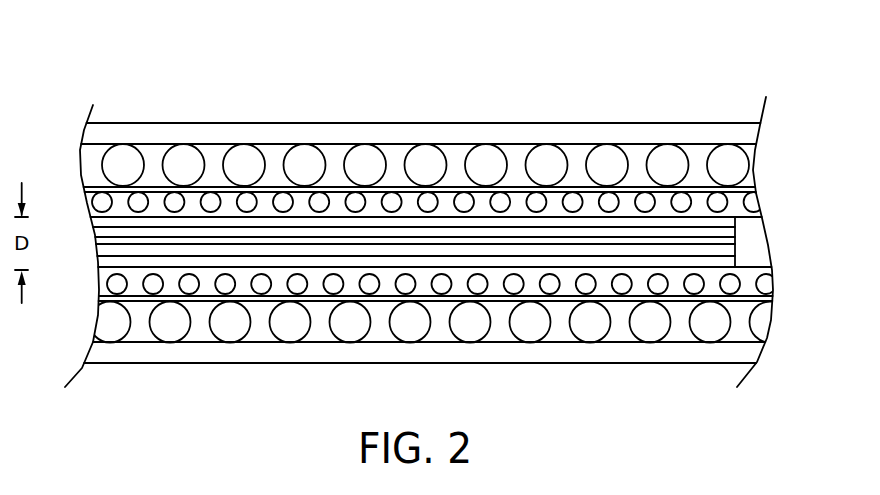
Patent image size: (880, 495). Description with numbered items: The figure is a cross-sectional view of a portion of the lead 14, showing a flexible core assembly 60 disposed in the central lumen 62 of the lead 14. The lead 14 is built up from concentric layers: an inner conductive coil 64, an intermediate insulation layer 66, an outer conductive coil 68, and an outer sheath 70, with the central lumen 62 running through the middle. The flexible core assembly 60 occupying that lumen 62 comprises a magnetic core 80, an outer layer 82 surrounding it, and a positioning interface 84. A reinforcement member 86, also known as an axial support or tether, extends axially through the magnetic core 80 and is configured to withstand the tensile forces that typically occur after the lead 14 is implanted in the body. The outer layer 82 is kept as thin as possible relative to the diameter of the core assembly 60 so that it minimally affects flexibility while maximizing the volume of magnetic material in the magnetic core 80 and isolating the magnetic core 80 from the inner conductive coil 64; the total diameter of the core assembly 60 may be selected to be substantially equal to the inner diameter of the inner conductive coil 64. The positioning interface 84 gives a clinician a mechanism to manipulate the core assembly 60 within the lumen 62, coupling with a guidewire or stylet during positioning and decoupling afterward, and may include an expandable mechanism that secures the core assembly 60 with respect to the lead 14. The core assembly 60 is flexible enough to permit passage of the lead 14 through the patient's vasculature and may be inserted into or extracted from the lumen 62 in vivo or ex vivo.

The lead 14 is at (687, 77).
The flexible core assembly 60 is at (382, 214).
The central lumen 62 is at (502, 214).
The inner conductive coil 64 is at (717, 203).
The intermediate insulation layer 66 is at (145, 172).
The outer conductive coil 68 is at (241, 162).
The outer sheath 70 is at (320, 133).
The magnetic core 80 is at (439, 249).
The outer layer 82 is at (103, 225).
The positioning interface 84 is at (752, 228).
The reinforcement member 86 is at (735, 242).